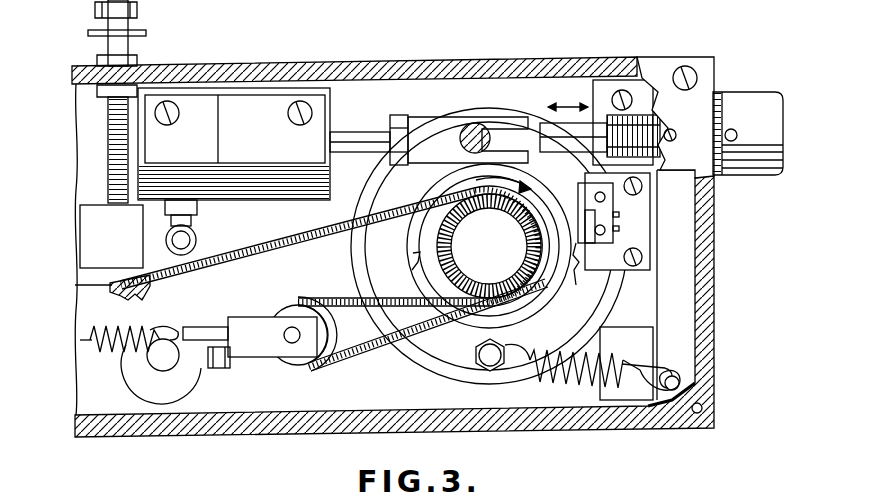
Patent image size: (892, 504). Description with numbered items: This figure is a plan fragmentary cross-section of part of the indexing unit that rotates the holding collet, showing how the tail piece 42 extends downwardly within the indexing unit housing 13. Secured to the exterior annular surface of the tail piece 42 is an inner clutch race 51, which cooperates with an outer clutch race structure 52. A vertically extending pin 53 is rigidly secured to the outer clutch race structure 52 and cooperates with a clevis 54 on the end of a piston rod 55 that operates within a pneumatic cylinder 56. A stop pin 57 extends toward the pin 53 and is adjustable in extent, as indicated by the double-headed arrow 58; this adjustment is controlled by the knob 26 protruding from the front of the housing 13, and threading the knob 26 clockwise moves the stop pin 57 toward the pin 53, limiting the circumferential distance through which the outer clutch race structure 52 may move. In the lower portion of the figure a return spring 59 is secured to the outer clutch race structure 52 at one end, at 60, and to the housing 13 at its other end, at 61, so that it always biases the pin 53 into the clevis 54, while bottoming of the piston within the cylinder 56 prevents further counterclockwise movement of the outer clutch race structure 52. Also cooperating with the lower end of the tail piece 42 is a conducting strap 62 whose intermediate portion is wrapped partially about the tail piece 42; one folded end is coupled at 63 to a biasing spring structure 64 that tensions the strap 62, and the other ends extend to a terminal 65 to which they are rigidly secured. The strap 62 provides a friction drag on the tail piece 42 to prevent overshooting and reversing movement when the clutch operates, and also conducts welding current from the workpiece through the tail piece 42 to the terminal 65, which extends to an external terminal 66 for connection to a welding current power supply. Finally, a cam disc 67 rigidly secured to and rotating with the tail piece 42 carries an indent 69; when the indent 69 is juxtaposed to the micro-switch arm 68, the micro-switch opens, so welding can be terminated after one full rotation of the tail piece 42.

The indexing unit housing 13 is at (427, 61).
The knob 26 is at (752, 176).
The tail piece 42 is at (447, 252).
The inner clutch race 51 is at (457, 225).
The outer clutch race structure 52 is at (353, 262).
The pin 53 is at (480, 127).
The clevis 54 is at (420, 123).
The piston rod 55 is at (345, 130).
The pneumatic cylinder 56 is at (263, 173).
The stop pin 57 is at (572, 133).
The double-headed arrow 58 is at (567, 103).
The return spring 59 is at (547, 350).
The spring attachment point on outer clutch race 60 is at (487, 356).
The spring attachment point on housing 61 is at (682, 377).
The conducting strap 62 is at (324, 360).
The strap coupling point 63 is at (250, 357).
The biasing spring structure 64 is at (96, 347).
The terminal 65 is at (110, 292).
The external terminal 66 is at (138, 13).
The cam disc 67 is at (445, 190).
The micro-switch arm 68 is at (577, 272).
The indent 69 is at (413, 253).